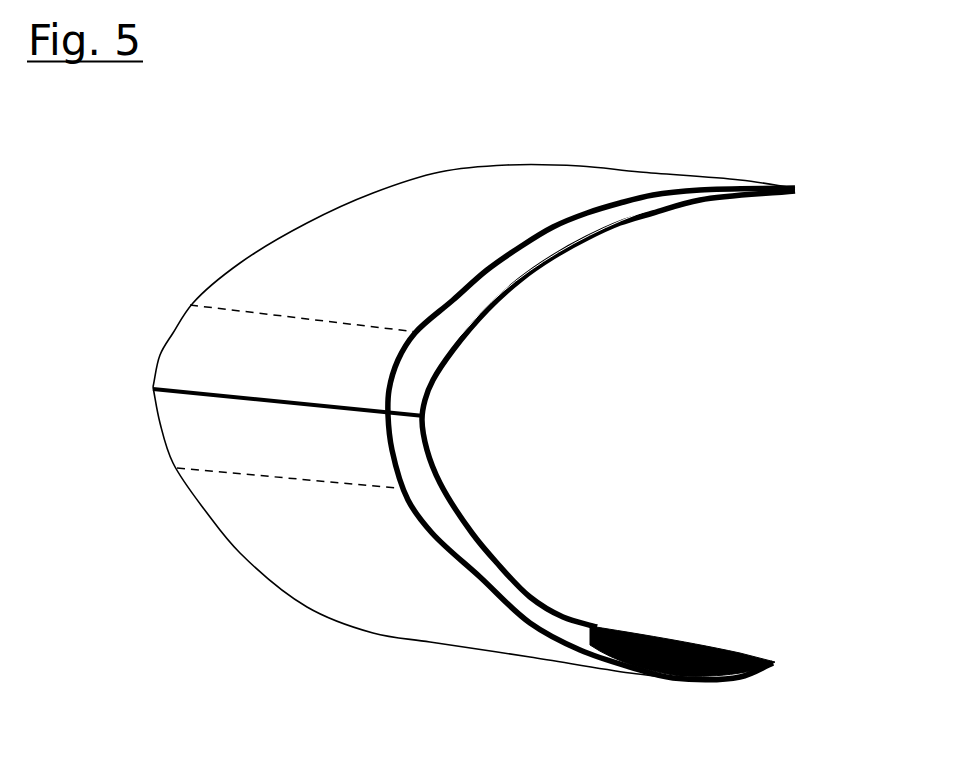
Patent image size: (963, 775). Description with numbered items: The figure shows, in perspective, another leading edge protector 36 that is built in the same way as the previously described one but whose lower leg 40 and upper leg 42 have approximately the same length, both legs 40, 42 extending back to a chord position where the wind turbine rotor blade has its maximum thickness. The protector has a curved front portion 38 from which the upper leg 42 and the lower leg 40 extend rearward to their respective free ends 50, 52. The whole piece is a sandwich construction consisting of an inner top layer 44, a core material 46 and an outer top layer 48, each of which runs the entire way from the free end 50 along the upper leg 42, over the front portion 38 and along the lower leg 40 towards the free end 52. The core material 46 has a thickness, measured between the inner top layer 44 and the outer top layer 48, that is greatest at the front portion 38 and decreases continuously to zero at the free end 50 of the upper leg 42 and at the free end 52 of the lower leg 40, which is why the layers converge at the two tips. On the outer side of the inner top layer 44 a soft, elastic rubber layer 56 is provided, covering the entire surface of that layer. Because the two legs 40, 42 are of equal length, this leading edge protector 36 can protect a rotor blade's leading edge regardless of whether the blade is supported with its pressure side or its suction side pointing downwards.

The leading edge protector 36 is at (763, 426).
The front portion 38 is at (122, 300).
The lower leg 40 is at (388, 602).
The upper leg 42 is at (362, 238).
The inner top layer 44 is at (497, 312).
The core material 46 is at (413, 468).
The outer top layer 48 is at (425, 512).
The free end of the upper leg 50 is at (798, 190).
The free end of the lower leg 52 is at (777, 662).
The soft, elastic rubber layer 56 is at (680, 637).